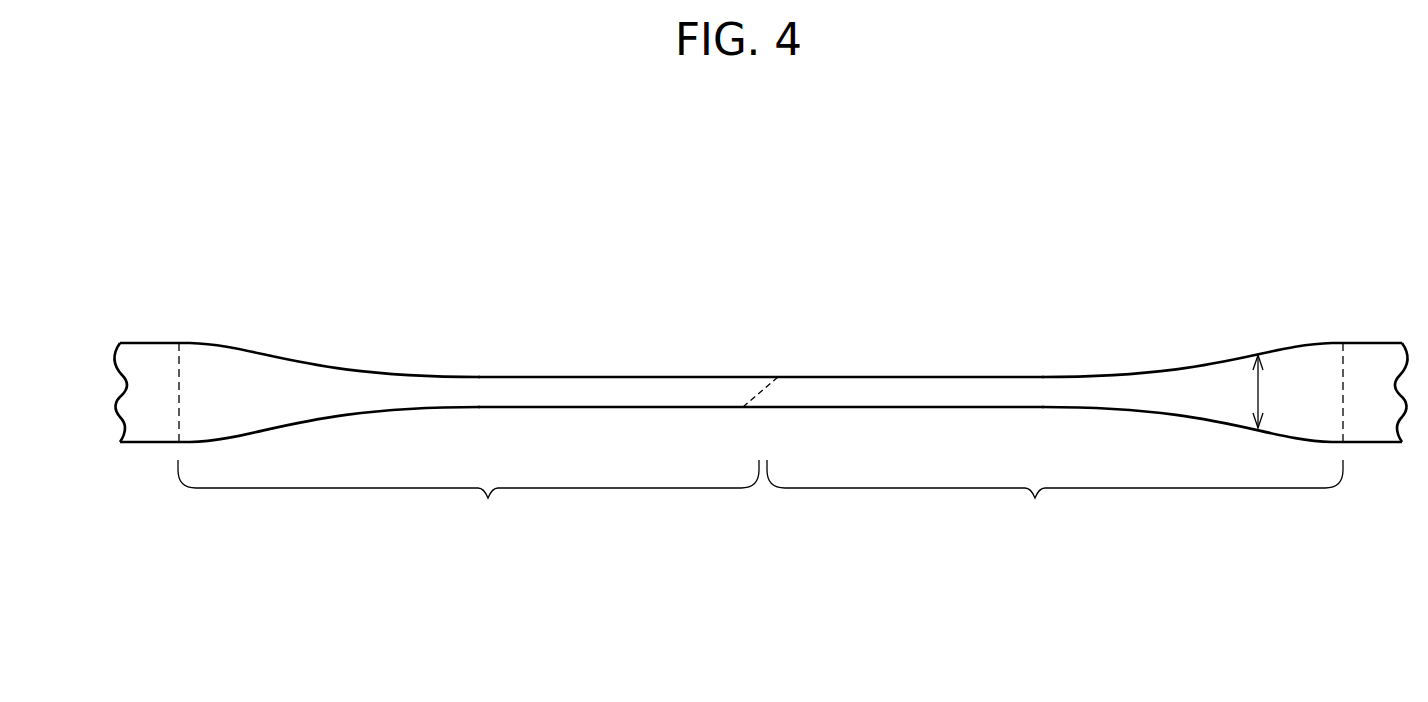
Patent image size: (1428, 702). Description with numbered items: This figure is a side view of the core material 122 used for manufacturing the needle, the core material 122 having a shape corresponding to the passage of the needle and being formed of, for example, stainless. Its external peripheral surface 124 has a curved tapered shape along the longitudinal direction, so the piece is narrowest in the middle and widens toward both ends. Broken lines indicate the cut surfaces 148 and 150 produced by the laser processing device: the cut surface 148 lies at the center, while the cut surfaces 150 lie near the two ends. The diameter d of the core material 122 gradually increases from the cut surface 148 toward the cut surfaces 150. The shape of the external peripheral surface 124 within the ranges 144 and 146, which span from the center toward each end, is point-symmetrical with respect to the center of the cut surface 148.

The core material 122 is at (992, 165).
The external peripheral surface 124 is at (928, 377).
The range 144 is at (468, 498).
The range 146 is at (1055, 498).
The cut surface 148 is at (762, 390).
The cut surface 150 is at (180, 385).